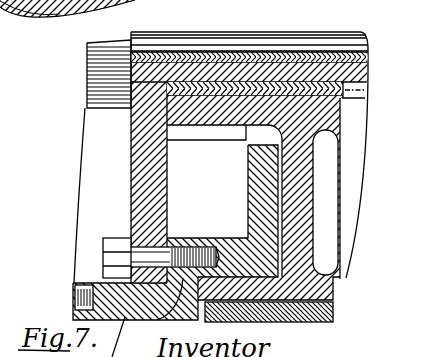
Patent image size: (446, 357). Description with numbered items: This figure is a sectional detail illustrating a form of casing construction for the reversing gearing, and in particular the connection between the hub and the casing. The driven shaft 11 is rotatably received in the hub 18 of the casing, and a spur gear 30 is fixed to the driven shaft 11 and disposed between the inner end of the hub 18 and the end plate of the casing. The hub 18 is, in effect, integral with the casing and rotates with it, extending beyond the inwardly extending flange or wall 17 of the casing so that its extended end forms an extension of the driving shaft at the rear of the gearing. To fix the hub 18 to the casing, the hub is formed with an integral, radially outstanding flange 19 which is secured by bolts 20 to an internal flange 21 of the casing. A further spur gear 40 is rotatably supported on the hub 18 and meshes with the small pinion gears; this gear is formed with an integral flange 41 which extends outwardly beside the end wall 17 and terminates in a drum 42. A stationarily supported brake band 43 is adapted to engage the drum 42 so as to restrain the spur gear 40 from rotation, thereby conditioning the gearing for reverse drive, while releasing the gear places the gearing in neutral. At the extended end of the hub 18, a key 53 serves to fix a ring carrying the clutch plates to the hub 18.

The driven shaft 11 is at (298, 43).
The inwardly extending flange or wall 17 is at (248, 170).
The hub 18 is at (236, 57).
The flange 19 is at (130, 199).
The bolts 20 is at (103, 259).
The internal flange 21 is at (162, 304).
The spur gear 30 is at (88, 78).
The spur gear 40 is at (200, 131).
The flange 41 is at (298, 170).
The drum 42 is at (331, 290).
The brake band 43 is at (333, 312).
The key 53 is at (370, 80).